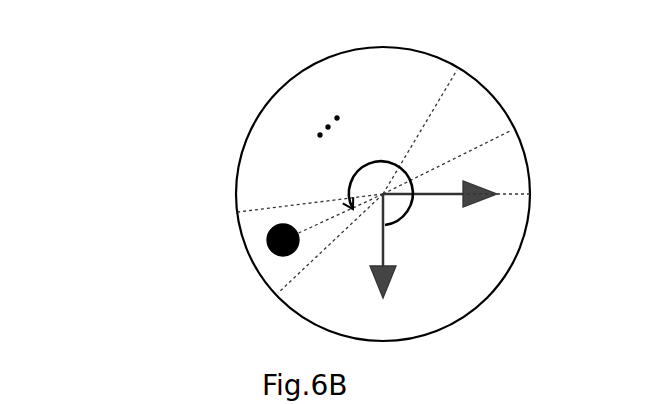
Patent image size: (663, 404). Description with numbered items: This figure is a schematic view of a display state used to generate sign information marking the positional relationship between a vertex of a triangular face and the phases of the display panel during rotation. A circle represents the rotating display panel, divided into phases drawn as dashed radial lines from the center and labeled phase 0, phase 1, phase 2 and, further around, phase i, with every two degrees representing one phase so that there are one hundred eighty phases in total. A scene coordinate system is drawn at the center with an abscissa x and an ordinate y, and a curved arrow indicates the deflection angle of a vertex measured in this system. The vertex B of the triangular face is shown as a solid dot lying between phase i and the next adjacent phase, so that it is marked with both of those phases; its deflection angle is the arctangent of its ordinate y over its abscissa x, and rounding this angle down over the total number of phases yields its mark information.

The vertex B is at (242, 247).
The phase 0 is at (474, 196).
The phase 1 is at (466, 149).
The phase 2 is at (432, 109).
The phase i is at (293, 216).
The abscissa x is at (365, 255).
The ordinate y is at (440, 216).